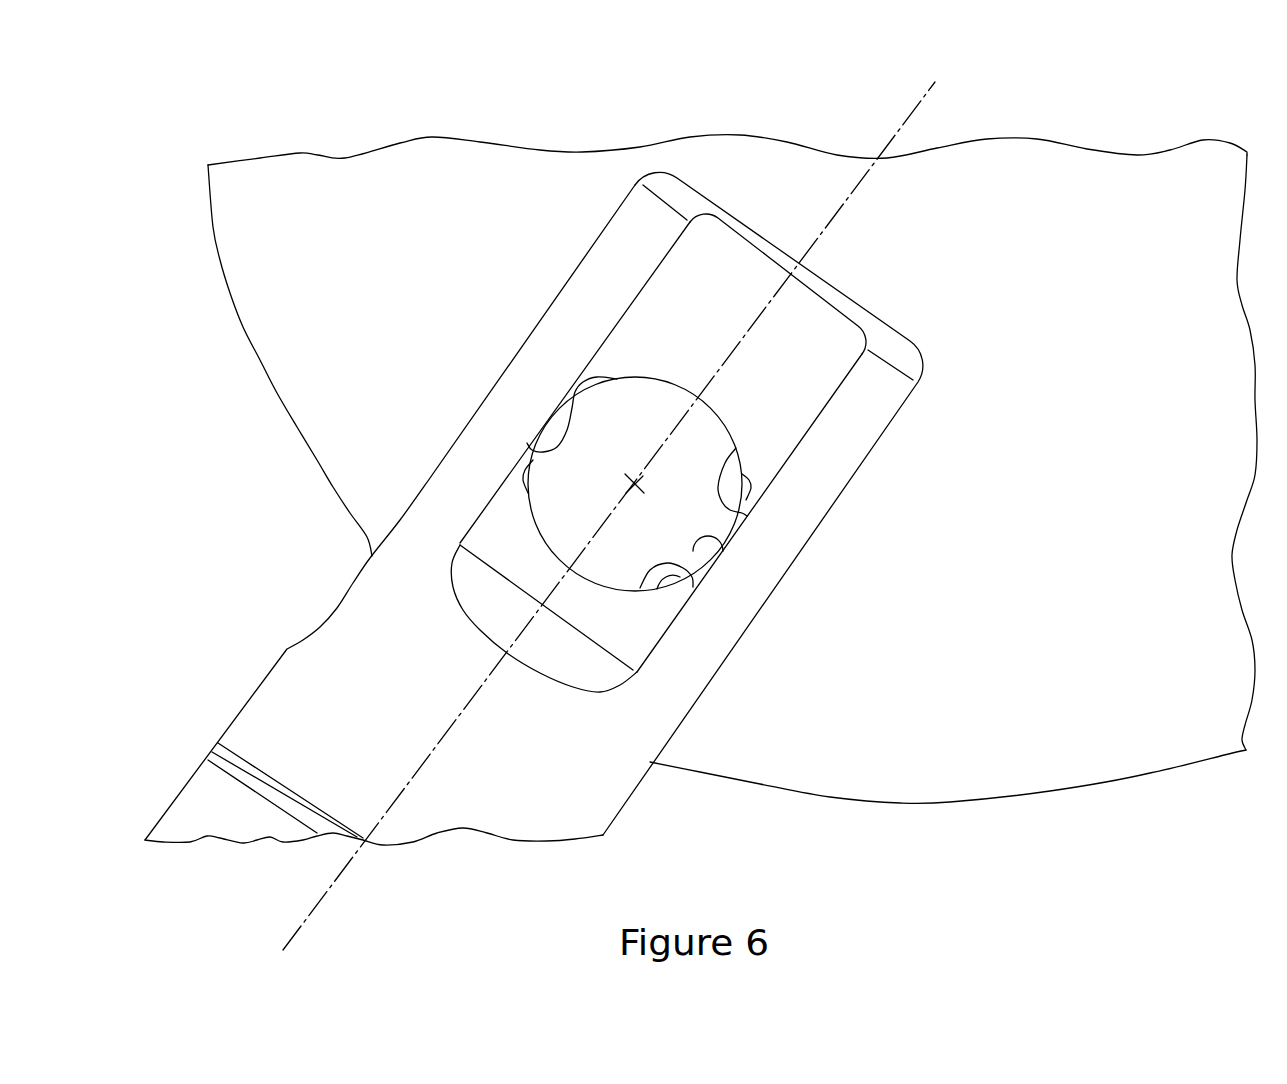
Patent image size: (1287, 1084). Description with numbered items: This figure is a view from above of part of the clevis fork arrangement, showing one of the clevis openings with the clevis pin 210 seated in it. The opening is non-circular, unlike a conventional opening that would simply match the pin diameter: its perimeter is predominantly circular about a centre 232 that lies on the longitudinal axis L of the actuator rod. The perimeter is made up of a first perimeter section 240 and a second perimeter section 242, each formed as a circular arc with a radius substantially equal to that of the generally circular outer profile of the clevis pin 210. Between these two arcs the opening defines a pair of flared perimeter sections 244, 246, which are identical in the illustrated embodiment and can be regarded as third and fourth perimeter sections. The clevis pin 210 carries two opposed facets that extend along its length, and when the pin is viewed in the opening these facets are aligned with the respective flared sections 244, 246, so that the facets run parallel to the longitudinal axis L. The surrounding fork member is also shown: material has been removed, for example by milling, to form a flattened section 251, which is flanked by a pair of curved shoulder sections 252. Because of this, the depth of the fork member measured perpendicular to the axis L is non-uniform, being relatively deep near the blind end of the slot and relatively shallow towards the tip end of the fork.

The clevis pin 210 is at (620, 552).
The centre 232 is at (643, 482).
The first perimeter section 240 is at (747, 517).
The second perimeter section 242 is at (703, 583).
The flared perimeter section 244 is at (573, 427).
The flared perimeter section 246 is at (730, 543).
The flattened section 251 is at (727, 247).
The curved shoulder sections 252 is at (575, 297).
The longitudinal axis L is at (930, 95).